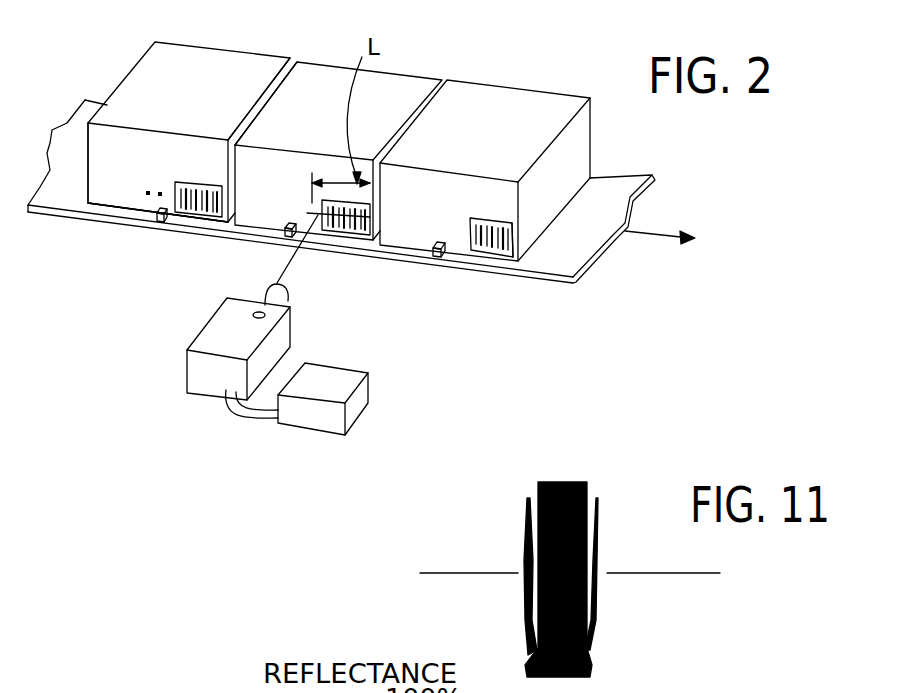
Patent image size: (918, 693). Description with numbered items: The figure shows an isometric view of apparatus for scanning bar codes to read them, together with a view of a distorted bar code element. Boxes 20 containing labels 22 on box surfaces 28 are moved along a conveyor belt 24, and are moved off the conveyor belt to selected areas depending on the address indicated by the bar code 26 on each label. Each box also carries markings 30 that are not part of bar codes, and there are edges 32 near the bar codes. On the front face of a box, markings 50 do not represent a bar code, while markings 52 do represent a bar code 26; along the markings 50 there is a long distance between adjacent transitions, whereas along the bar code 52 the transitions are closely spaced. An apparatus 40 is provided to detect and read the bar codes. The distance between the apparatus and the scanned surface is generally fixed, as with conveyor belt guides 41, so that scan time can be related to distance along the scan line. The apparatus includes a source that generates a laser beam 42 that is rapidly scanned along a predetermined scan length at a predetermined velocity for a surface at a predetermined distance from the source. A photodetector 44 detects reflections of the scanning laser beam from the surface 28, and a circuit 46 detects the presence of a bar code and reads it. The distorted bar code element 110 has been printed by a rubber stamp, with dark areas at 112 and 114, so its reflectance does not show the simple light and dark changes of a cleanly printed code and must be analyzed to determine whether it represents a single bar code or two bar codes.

In FIG. 2, the box 20 is at (173, 42).
In FIG. 2, the label 22 is at (497, 258).
In FIG. 2, the conveyor belt 24 is at (633, 172).
In FIG. 2, the bar code 26 is at (512, 242).
In FIG. 2, the box surface 28 is at (100, 142).
In FIG. 2, the markings 30 is at (107, 205).
In FIG. 2, the edge 32 is at (262, 43).
In FIG. 2, the apparatus 40 is at (208, 322).
In FIG. 2, the conveyor belt guide 41 is at (437, 258).
In FIG. 2, the laser beam 42 is at (285, 272).
In FIG. 2, the photodetector 44 is at (267, 317).
In FIG. 2, the circuit 46 is at (302, 430).
In FIG. 2, the markings 50 is at (128, 170).
In FIG. 2, the bar code markings 52 is at (192, 214).
In FIG. 11, the bar code element 110 is at (576, 460).
In FIG. 11, the dark area 112 is at (538, 590).
In FIG. 11, the dark area 114 is at (523, 530).